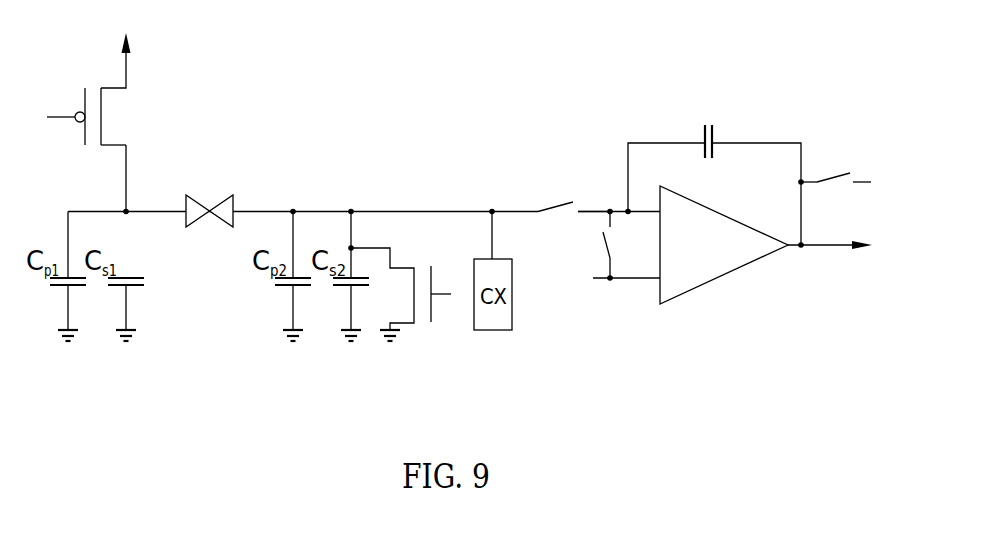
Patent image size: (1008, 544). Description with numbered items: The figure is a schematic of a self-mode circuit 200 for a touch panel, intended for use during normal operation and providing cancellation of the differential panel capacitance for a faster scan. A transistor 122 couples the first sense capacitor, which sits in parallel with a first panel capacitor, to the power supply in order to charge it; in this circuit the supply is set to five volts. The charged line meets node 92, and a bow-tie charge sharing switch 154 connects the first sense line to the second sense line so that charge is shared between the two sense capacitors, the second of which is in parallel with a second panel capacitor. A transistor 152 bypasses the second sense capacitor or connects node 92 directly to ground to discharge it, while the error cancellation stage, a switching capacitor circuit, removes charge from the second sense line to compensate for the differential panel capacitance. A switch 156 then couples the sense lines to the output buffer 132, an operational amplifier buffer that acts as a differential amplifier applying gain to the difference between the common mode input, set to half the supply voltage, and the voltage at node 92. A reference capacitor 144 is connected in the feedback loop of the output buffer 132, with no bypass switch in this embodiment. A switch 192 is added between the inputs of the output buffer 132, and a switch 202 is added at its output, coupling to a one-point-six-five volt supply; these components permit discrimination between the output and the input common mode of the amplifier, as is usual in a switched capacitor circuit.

The transistor 122 is at (114, 87).
The node 92 is at (130, 208).
The charge sharing switch 154 is at (217, 203).
The transistor 152 is at (406, 321).
The switch 156 is at (563, 202).
The switch 192 is at (602, 241).
The output buffer 132 is at (742, 271).
The reference capacitor 144 is at (716, 152).
The switch 202 is at (838, 175).
The self-mode circuit 200 is at (712, 50).